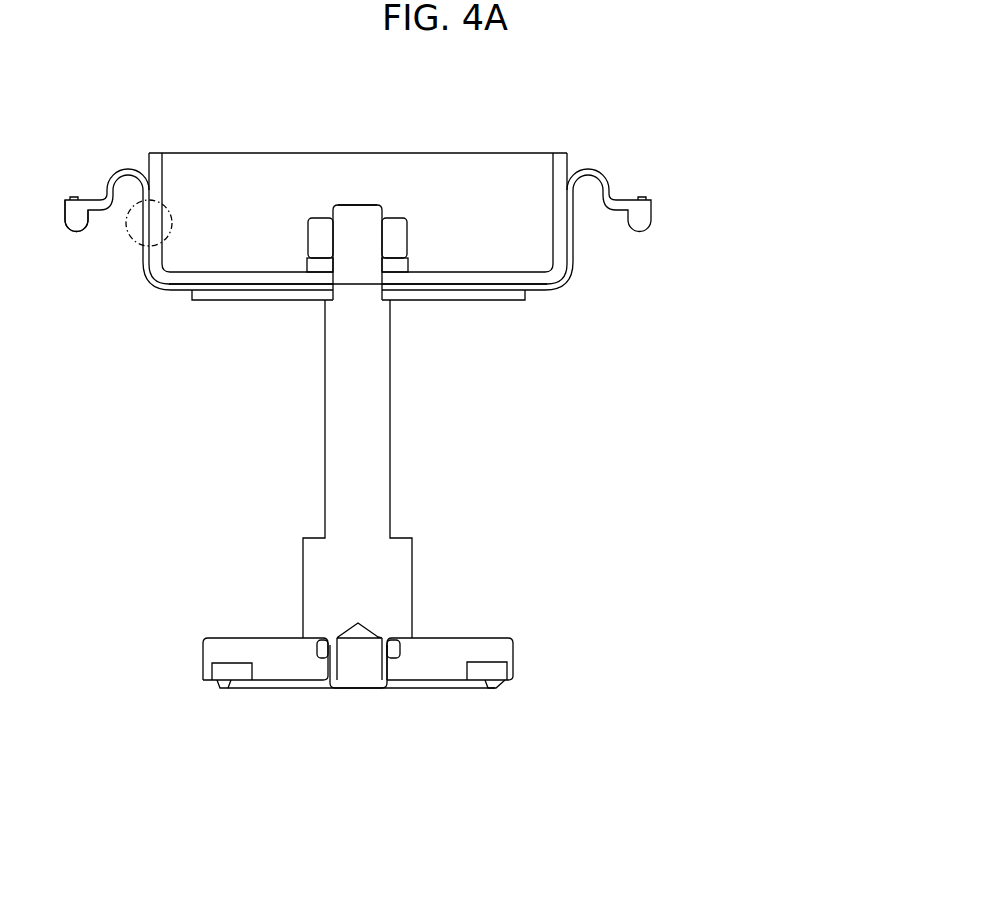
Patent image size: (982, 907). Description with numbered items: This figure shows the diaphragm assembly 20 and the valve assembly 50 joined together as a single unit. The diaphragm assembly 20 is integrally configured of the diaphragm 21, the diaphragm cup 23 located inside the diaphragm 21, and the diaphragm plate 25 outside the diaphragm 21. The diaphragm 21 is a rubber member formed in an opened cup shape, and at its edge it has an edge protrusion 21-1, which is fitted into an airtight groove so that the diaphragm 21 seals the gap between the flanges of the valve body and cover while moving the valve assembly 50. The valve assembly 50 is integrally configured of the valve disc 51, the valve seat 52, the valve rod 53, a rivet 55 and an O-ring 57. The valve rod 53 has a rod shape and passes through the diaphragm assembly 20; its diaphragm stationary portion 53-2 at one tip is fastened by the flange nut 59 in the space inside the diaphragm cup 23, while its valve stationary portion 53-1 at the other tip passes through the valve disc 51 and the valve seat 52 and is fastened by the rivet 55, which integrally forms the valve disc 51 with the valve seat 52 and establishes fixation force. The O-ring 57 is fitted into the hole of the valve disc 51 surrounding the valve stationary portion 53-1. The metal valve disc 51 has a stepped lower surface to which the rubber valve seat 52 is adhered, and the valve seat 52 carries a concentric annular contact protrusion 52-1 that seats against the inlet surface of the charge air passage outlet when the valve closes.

The diaphragm assembly 20 is at (767, 138).
The diaphragm 21 is at (570, 235).
The edge protrusion 21-1 is at (75, 225).
The diaphragm cup 23 is at (563, 162).
The diaphragm plate 25 is at (525, 300).
The valve assembly 50 is at (470, 522).
The valve disc 51 is at (487, 652).
The valve seat 52 is at (508, 680).
The annular contact protrusion 52-1 is at (490, 685).
The valve rod 53 is at (372, 437).
The valve stationary portion 53-1 is at (388, 663).
The diaphragm stationary portion 53-2 is at (365, 270).
The rivet 55 is at (360, 663).
The O-ring 57 is at (393, 647).
The flange nut 59 is at (392, 222).